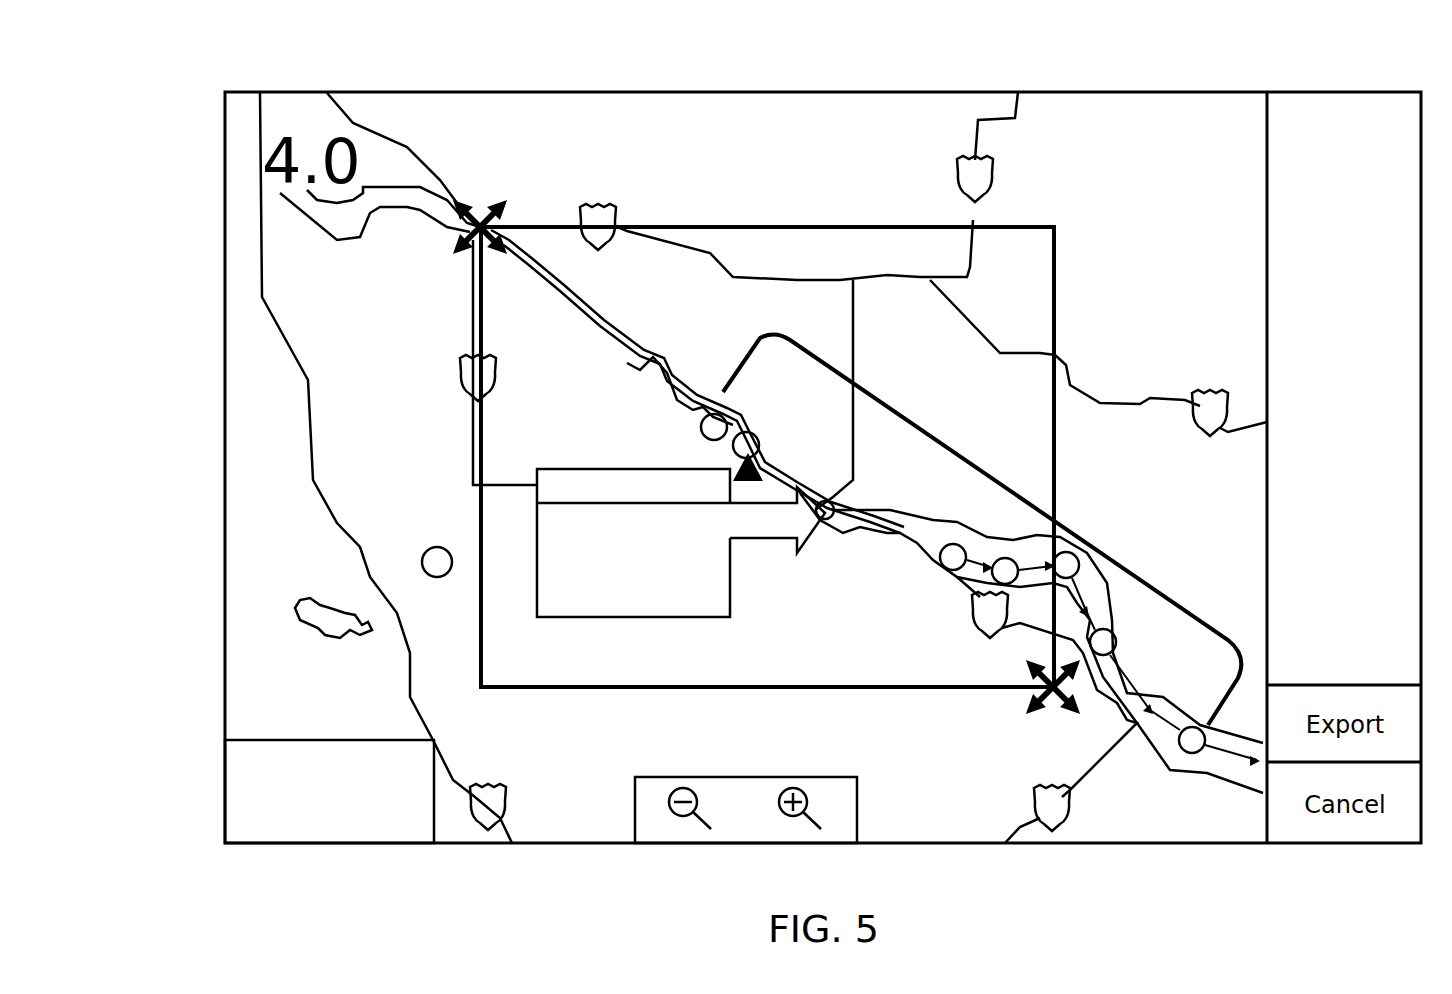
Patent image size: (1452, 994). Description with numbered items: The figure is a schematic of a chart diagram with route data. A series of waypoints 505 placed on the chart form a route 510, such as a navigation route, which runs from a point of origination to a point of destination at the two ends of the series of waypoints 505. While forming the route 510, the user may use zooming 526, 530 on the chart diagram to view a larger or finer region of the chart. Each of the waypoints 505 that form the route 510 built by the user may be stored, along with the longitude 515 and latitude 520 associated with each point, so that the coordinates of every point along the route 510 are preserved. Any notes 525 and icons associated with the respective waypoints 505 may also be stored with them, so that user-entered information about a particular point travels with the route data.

The waypoints 505 is at (740, 418).
The route 510 is at (997, 382).
The longitude 515 is at (230, 753).
The latitude 520 is at (230, 789).
The notes 525 is at (537, 548).
The zooming 526 is at (783, 813).
The zooming 530 is at (675, 814).